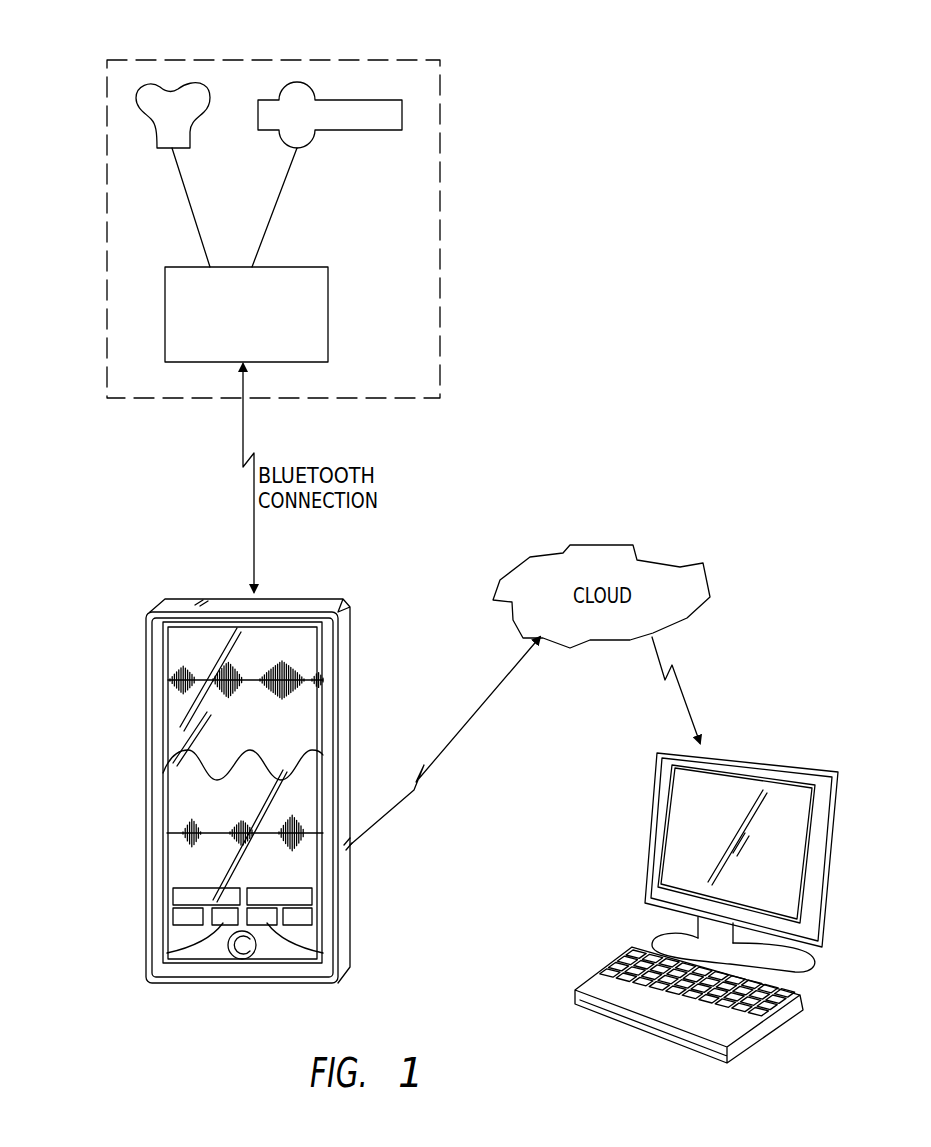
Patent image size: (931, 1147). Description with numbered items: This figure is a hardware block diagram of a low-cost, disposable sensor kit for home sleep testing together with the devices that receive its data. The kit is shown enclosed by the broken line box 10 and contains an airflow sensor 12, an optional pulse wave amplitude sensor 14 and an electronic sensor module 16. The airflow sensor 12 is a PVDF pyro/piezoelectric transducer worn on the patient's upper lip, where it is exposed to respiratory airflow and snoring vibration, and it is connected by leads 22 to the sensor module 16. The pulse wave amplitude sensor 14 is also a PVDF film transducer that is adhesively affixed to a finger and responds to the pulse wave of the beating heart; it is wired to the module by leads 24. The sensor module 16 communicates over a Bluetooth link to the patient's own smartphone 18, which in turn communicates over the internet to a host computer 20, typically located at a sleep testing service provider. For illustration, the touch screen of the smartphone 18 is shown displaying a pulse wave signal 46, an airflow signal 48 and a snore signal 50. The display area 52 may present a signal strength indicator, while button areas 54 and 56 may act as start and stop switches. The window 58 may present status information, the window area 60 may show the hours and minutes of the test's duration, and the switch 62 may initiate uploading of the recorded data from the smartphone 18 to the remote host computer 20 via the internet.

The broken line box 10 is at (440, 108).
The airflow sensor 12 is at (192, 83).
The pulse wave amplitude sensor 14 is at (348, 100).
The electronic sensor module 16 is at (330, 302).
The smartphone 18 is at (147, 683).
The host computer 20 is at (657, 787).
The leads 22 is at (187, 190).
The leads 24 is at (285, 180).
The pulse wave signal 46 is at (175, 672).
The airflow signal 48 is at (173, 753).
The snore signal 50 is at (185, 826).
The signal strength indicator area 52 is at (188, 892).
The start switch button area 54 is at (177, 917).
The stop switch button area 56 is at (167, 953).
The status window 58 is at (293, 892).
The test duration window area 60 is at (322, 953).
The upload switch 62 is at (307, 917).